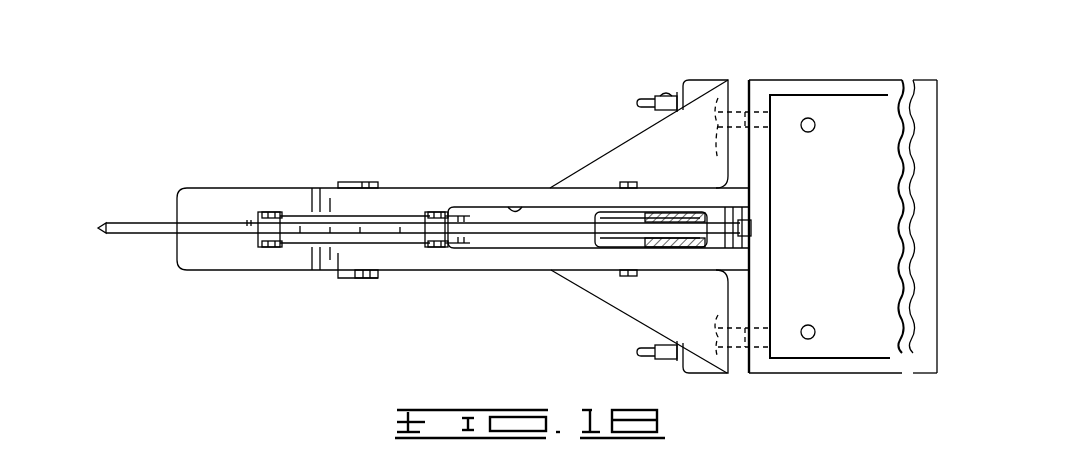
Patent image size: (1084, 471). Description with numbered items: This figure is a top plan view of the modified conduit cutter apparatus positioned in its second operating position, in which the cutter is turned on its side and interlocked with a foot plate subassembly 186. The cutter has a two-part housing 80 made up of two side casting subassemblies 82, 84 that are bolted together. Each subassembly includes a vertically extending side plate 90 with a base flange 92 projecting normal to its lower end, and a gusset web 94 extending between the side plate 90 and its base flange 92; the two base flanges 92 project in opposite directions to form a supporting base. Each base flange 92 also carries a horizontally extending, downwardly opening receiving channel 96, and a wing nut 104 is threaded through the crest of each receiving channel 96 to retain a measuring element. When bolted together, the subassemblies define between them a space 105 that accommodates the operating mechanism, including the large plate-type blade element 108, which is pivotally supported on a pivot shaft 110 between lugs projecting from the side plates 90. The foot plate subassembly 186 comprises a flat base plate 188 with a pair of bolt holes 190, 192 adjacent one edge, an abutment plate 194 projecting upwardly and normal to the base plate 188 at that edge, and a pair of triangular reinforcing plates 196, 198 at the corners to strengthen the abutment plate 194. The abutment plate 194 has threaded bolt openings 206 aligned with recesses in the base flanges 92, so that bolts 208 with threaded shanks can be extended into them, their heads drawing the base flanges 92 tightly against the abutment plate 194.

The two-part housing 80 is at (262, 178).
The side casting subassembly 82 is at (390, 188).
The side casting subassembly 84 is at (444, 282).
The side plate 90 is at (428, 192).
The base flange 92 is at (749, 82).
The gusset web 94 is at (697, 155).
The receiving channel 96 is at (693, 82).
The wing nut 104 is at (638, 104).
The space 105 is at (523, 208).
The blade element 108 is at (156, 205).
The pivot shaft 110 is at (344, 280).
The foot plate subassembly 186 is at (884, 60).
The base plate 188 is at (838, 212).
The bolt hole 190 is at (815, 125).
The bolt hole 192 is at (815, 332).
The abutment plate 194 is at (770, 258).
The triangular reinforcing plate 196 is at (820, 85).
The triangular reinforcing plate 198 is at (860, 372).
The threaded bolt opening 206 is at (770, 112).
The bolt 208 is at (718, 158).